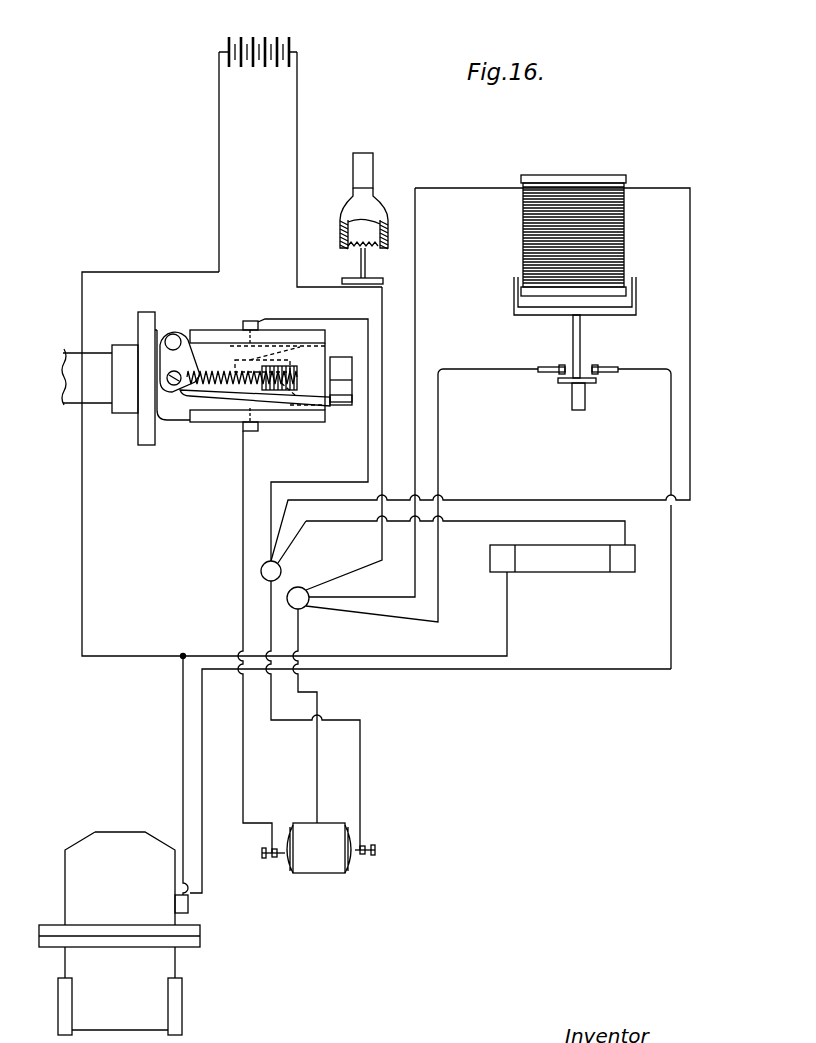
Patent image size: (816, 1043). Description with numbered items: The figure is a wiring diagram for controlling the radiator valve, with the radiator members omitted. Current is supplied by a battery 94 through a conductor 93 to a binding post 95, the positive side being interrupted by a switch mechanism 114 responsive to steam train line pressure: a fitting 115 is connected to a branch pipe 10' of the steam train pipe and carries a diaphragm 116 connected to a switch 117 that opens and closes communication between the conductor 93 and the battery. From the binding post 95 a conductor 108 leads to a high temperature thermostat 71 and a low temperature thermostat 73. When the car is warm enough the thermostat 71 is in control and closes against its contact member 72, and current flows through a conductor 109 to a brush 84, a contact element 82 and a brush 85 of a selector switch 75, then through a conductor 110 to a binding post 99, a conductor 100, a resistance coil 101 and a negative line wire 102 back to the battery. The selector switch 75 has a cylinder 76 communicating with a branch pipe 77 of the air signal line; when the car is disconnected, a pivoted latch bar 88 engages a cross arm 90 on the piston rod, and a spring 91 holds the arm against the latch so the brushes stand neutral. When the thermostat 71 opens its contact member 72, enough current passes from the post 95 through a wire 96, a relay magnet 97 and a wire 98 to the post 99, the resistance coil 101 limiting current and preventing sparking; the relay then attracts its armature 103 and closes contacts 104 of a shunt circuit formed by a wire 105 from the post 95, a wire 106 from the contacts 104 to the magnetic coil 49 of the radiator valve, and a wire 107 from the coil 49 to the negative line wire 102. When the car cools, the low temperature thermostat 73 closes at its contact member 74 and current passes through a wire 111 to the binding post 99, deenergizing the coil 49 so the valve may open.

The battery 94 is at (288, 48).
The branch pipe 10' is at (374, 154).
The fitting 115 is at (373, 200).
The diaphragm 116 is at (386, 236).
The switch mechanism 114 is at (366, 268).
The switch 117 is at (362, 290).
The conductor 93 is at (360, 438).
The branch pipe 77 is at (70, 353).
The cylinder 76 is at (118, 408).
The selector switch 75 is at (222, 418).
The spring 91 is at (207, 372).
The latch bar 88 is at (205, 392).
The contact element 82 is at (256, 371).
The cross arm 90 is at (312, 366).
The spring contact element 84 is at (259, 321).
The spring contact element 85 is at (298, 420).
The conductor 110 is at (313, 425).
The relay magnet 97 is at (624, 236).
The armature 103 is at (580, 335).
The contacts 104 is at (562, 366).
The wire 98 is at (692, 336).
The wire 96 is at (352, 599).
The conductor 100 is at (451, 539).
The wire 105 is at (439, 556).
The wire 106 is at (673, 548).
The resistance coil 101 is at (619, 575).
The negative line wire 102 is at (82, 452).
The binding post 99 is at (261, 573).
The binding post 95 is at (299, 590).
The wire 111 is at (360, 757).
The conductor 108 is at (319, 707).
The conductor 109 is at (244, 750).
The wire 107 is at (183, 750).
The magnetic coil 49 is at (128, 840).
The high temperature thermostat 71 is at (300, 862).
The contact member 72 is at (281, 868).
The low temperature thermostat 73 is at (349, 866).
The contact member 74 is at (368, 848).